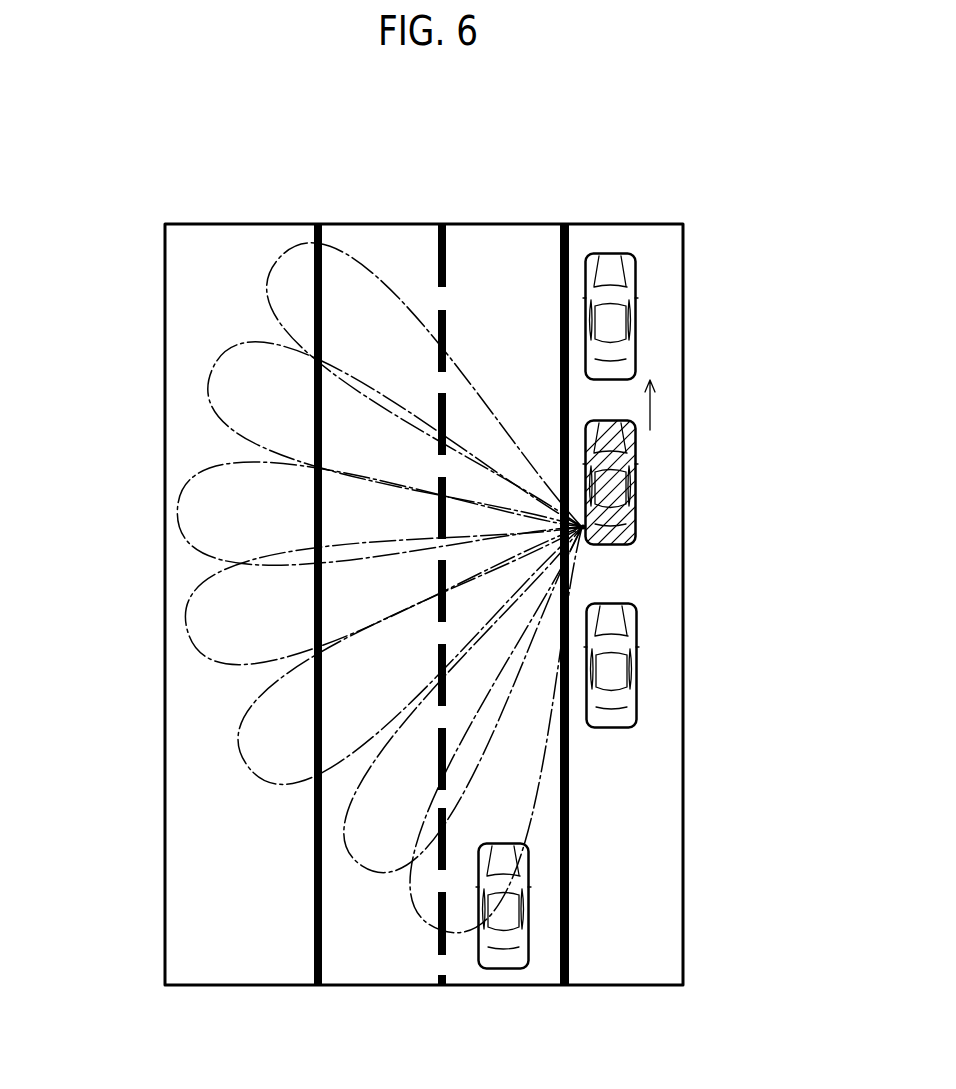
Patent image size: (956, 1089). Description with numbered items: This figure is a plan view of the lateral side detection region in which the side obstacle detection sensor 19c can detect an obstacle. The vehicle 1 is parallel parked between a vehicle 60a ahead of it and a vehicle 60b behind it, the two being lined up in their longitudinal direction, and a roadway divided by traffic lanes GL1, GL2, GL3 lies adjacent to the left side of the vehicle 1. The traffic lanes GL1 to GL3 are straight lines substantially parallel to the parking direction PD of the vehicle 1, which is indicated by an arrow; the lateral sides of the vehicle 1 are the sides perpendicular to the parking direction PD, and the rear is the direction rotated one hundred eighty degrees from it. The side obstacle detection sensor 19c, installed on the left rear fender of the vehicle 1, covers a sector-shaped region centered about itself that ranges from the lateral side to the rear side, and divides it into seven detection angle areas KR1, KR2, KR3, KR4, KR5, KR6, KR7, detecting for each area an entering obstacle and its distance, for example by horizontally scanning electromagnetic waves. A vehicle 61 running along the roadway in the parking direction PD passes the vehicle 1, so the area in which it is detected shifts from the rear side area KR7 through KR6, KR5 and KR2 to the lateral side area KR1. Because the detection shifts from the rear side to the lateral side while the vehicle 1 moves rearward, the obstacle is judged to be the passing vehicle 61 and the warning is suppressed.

The traffic lane GL1 is at (311, 224).
The traffic lane GL2 is at (435, 226).
The traffic lane GL3 is at (557, 232).
The detection angle area KR1 is at (277, 283).
The detection angle area KR2 is at (207, 384).
The detection angle area KR3 is at (178, 519).
The detection angle area KR4 is at (187, 637).
The detection angle area KR5 is at (240, 773).
The detection angle area KR6 is at (360, 860).
The detection angle area KR7 is at (428, 917).
The vehicle 60a is at (636, 345).
The vehicle 60b is at (633, 670).
The vehicle 1 is at (636, 487).
The side obstacle detection sensor 19c is at (633, 533).
The vehicle 61 is at (498, 970).
The parking direction PD is at (652, 407).